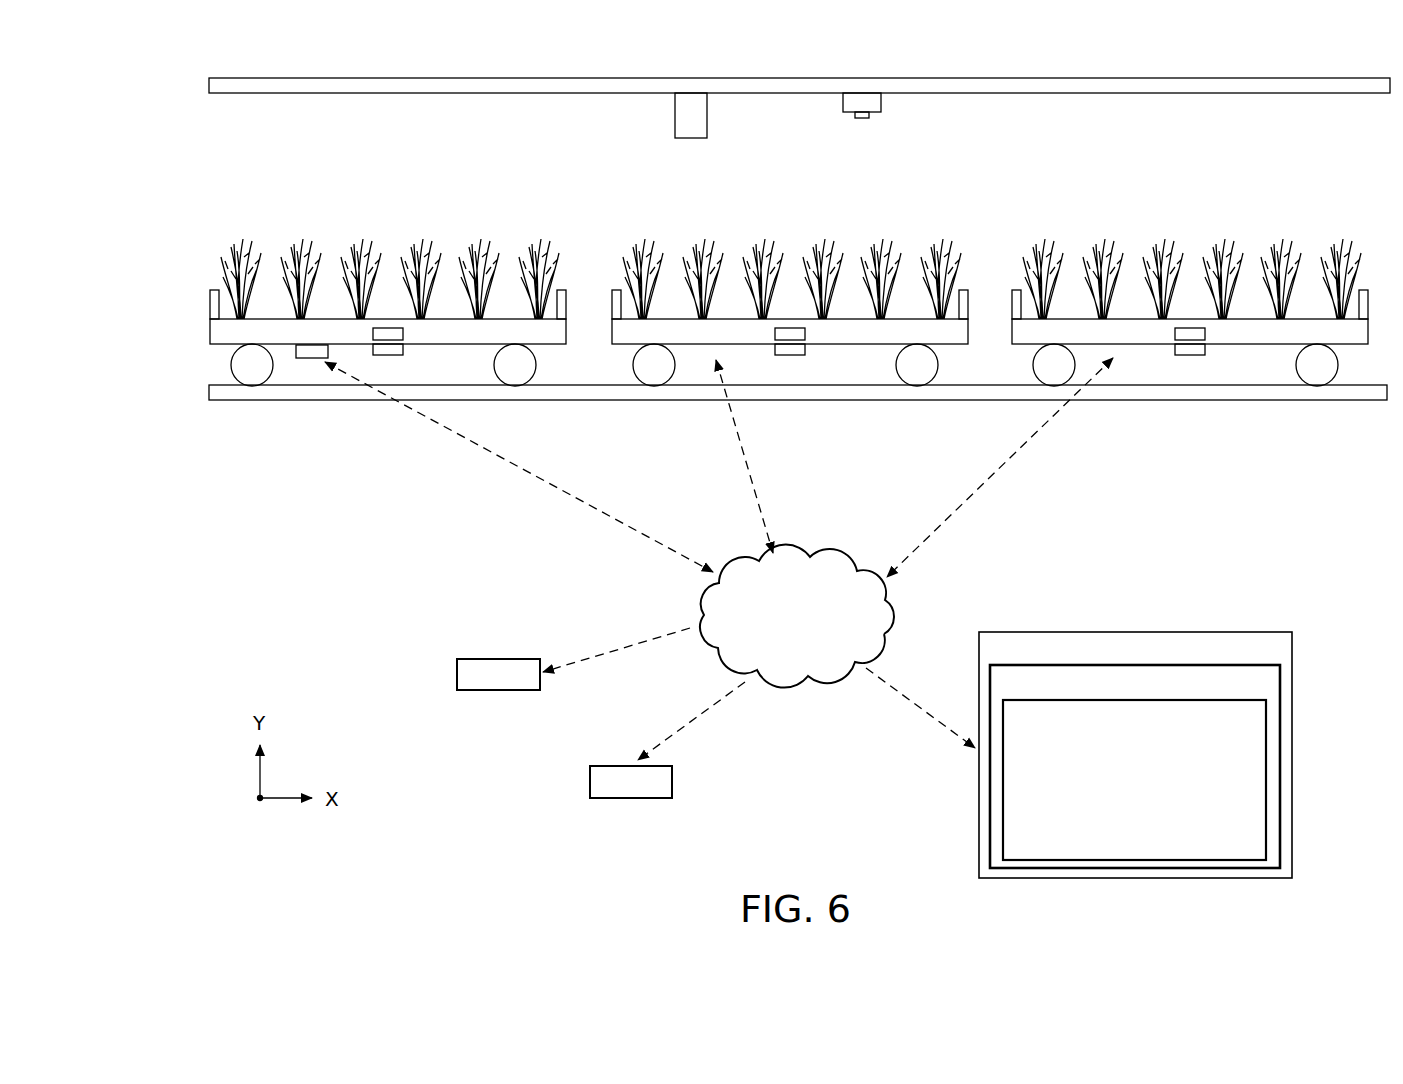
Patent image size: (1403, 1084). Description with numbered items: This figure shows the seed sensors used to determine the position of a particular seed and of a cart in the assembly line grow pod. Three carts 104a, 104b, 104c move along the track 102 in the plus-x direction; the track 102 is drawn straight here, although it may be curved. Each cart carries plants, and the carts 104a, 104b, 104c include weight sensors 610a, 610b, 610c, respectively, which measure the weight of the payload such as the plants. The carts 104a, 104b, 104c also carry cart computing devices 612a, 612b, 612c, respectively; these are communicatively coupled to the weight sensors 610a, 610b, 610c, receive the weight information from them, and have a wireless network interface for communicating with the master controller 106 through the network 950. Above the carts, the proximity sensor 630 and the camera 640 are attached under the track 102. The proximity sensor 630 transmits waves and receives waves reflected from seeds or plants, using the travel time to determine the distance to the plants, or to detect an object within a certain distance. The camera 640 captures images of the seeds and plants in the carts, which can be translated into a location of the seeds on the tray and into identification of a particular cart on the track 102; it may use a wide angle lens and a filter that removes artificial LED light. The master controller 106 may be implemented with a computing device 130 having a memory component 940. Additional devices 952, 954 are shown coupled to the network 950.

The track 102 is at (258, 94).
The proximity sensor 630 is at (661, 105).
The camera 640 is at (893, 106).
The cart 104c is at (199, 290).
The cart 104b is at (608, 283).
The cart 104a is at (1008, 283).
The weight sensor 610c is at (410, 331).
The weight sensor 610b is at (812, 331).
The weight sensor 610a is at (1212, 331).
The cart computing device 612c is at (387, 360).
The cart computing device 612b is at (791, 360).
The cart computing device 612a is at (1191, 360).
The network 950 is at (797, 616).
The user computing device 952 is at (496, 690).
The remote computing device 954 is at (628, 798).
The master controller 106 is at (1292, 650).
The computing device 130 is at (1280, 692).
The memory component 940 is at (1266, 738).